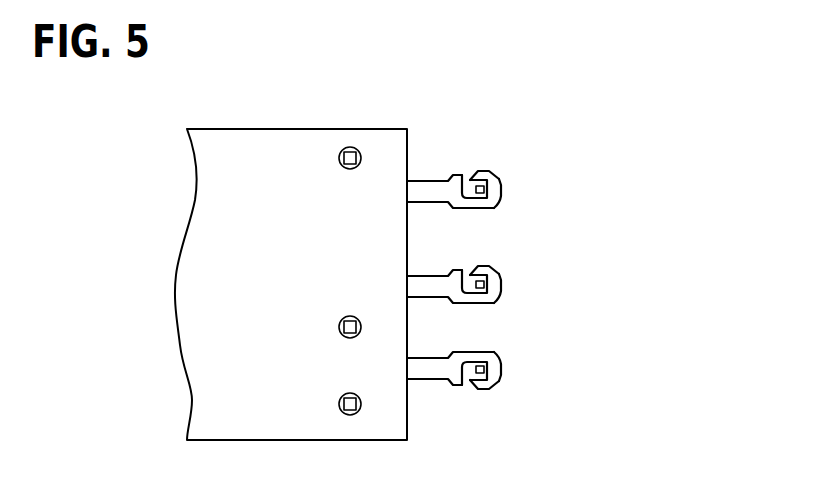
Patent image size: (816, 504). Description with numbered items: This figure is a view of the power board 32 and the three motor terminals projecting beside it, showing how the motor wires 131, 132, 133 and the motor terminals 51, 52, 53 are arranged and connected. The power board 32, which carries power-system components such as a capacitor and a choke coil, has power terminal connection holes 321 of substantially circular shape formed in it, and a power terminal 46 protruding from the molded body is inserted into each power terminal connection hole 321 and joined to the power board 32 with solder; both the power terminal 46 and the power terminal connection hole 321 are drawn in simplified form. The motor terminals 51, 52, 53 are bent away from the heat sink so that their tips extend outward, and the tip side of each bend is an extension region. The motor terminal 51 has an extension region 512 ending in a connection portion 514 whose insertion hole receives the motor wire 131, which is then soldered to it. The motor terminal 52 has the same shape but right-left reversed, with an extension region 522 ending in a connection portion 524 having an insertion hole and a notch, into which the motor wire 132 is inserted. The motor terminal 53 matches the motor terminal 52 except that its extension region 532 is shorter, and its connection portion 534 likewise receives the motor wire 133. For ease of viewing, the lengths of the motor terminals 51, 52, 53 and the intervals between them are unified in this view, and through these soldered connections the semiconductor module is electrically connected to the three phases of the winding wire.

The power board 32 is at (388, 141).
The power terminal connection hole 321 is at (352, 156).
The power terminal 46 is at (339, 159).
The motor terminal 51 is at (497, 383).
The extension region 512 is at (433, 372).
The connection portion 514 is at (497, 356).
The motor wire 131 is at (490, 370).
The motor terminal 52 is at (493, 275).
The extension region 522 is at (432, 282).
The connection portion 524 is at (495, 275).
The motor wire 132 is at (487, 290).
The motor terminal 53 is at (493, 176).
The extension region 532 is at (432, 187).
The connection portion 534 is at (495, 180).
The motor wire 133 is at (486, 191).